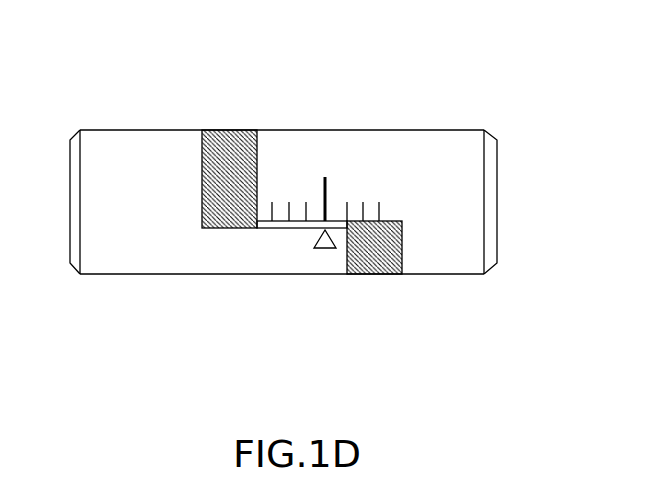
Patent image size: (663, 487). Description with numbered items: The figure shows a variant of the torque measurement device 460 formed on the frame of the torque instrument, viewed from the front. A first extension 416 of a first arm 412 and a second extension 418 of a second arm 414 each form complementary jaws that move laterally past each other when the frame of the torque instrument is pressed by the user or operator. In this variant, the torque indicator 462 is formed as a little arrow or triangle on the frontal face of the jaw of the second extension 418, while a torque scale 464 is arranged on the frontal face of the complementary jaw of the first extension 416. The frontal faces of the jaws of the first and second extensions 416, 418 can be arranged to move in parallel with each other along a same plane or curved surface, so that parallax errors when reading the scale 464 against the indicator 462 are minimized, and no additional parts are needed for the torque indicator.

The second extension 418 is at (125, 173).
The first extension 416 is at (447, 187).
The second arm 414 is at (78, 280).
The first arm 412 is at (492, 280).
The torque scale 464 is at (352, 167).
The torque indicator 462 is at (302, 243).
The torque measurement device 460 is at (372, 305).